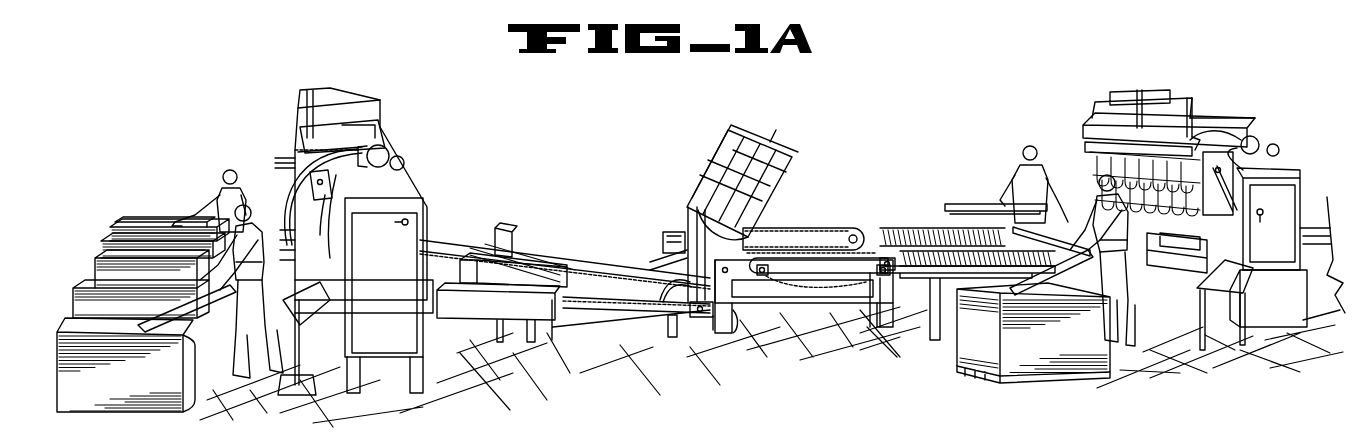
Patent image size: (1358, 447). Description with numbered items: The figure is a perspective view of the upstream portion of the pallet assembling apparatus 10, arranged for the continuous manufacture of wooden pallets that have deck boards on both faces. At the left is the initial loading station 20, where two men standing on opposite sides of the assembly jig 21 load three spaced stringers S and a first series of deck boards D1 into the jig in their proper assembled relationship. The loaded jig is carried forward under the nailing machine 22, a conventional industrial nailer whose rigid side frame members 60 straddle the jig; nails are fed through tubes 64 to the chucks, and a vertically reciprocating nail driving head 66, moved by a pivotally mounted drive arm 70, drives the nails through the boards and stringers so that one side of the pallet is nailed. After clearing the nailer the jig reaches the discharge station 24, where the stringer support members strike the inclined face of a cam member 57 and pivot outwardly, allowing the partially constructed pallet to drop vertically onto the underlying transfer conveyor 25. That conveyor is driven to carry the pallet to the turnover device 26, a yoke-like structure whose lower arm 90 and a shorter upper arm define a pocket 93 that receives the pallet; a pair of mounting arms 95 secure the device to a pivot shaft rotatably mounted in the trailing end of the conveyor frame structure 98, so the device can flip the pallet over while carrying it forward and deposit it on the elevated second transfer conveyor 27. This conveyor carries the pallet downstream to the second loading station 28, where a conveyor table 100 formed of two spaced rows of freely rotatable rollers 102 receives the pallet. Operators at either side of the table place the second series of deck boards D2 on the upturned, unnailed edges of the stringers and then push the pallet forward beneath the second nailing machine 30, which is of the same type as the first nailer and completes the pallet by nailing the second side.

The pallet assembling apparatus 10 is at (922, 85).
The initial loading station 20 is at (205, 195).
The assembly jig 21 is at (180, 243).
The nailing machine 22 is at (402, 131).
The discharge station 24 is at (460, 240).
The transfer conveyor 25 is at (622, 320).
The turnover device 26 is at (650, 232).
The second transfer conveyor 27 is at (793, 226).
The second loading station 28 is at (1062, 185).
The second nailing machine 30 is at (1220, 116).
The cam member 57 is at (508, 290).
The side frame members 60 is at (412, 177).
The tubes 64 is at (300, 180).
The nail driving head 66 is at (322, 232).
The drive arm 70 is at (340, 258).
The lower arm 90 is at (705, 185).
The pocket 93 is at (762, 182).
The mounting arms 95 is at (700, 255).
The conveyor frame structure 98 is at (726, 322).
The conveyor table 100 is at (928, 225).
The rollers 102 is at (913, 240).
The stringers S is at (185, 292).
The first series of deck boards D1 is at (232, 292).
The second series of deck boards D2 is at (1013, 223).